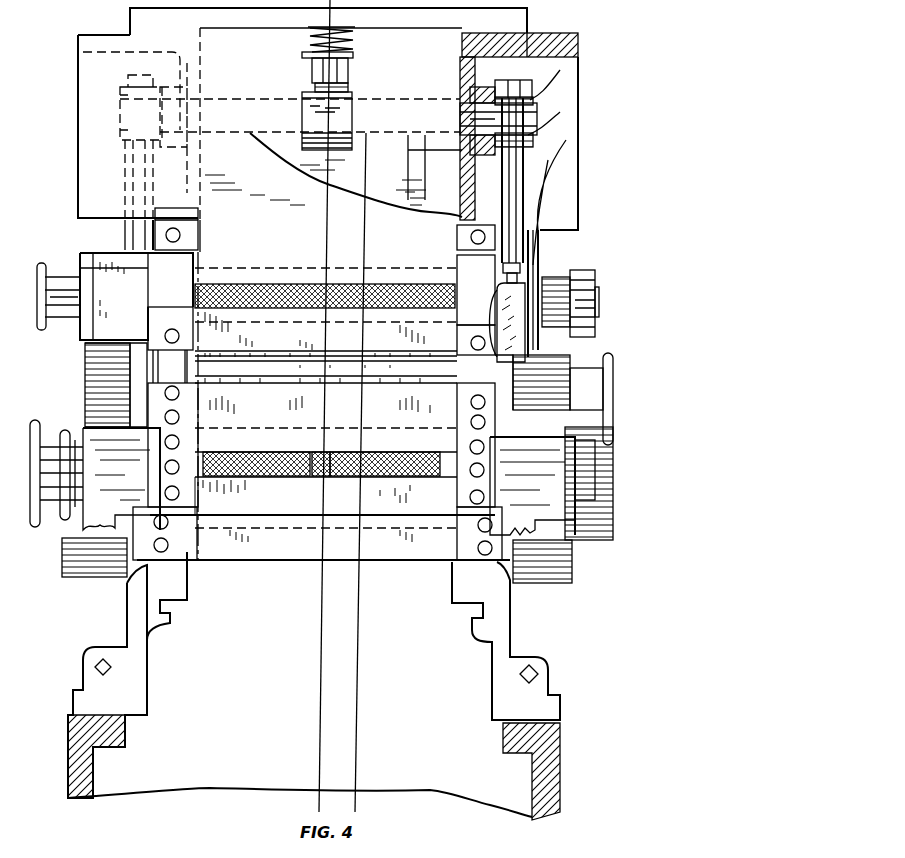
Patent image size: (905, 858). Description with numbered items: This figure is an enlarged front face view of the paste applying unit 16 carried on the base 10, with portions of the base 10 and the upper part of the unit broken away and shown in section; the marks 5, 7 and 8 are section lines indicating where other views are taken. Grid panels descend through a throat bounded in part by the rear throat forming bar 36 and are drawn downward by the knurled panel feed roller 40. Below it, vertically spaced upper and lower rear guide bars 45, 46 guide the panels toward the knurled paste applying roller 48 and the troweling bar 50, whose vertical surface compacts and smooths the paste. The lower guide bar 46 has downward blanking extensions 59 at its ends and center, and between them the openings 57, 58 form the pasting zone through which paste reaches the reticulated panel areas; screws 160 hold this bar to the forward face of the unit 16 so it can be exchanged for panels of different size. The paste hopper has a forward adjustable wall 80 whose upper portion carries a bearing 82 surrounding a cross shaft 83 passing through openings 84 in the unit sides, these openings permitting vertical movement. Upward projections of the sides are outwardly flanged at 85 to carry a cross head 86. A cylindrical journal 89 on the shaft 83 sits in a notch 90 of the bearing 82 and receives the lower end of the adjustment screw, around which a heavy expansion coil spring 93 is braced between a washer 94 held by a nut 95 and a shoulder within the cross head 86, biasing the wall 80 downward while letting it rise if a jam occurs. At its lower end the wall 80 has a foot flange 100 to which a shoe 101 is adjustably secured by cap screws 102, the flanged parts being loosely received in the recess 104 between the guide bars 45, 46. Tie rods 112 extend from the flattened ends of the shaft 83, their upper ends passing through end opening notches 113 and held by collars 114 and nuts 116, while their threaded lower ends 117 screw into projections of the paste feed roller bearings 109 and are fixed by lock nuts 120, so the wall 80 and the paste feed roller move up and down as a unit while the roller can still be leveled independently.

The gear 5 is at (540, 373).
The section line 7 is at (328, 8).
The section line 8 is at (325, 225).
The base 10 is at (560, 776).
The paste applying unit 16 is at (533, 36).
The rear throat forming bar 36 is at (315, 195).
The panel feed roller 40 is at (380, 292).
The upper rear guide bar 45 is at (240, 313).
The lower rear guide bar 46 is at (326, 410).
The paste applying roller 48 is at (394, 447).
The troweling bar 50 is at (262, 545).
The opening 57 is at (253, 452).
The opening 58 is at (345, 452).
The extensions 59 is at (202, 480).
The forward adjustable hopper wall 80 is at (418, 167).
The bearing 82 is at (397, 100).
The cross shaft 83 is at (488, 87).
The openings 84 is at (195, 88).
The outward flanges 85 is at (82, 60).
The cross head 86 is at (527, 22).
The cylindrical journal 89 is at (343, 100).
The notch 90 is at (312, 90).
The expansion coil spring 93 is at (350, 42).
The washer 94 is at (370, 48).
The nut 95 is at (302, 68).
The foot flange 100 is at (335, 362).
The shoe 101 is at (385, 375).
The cap screws 102 is at (262, 355).
The recess 104 is at (338, 385).
The bearings 109 is at (548, 311).
The tie rods 112 is at (525, 200).
The end opening notches 113 is at (552, 105).
The collars 114 is at (120, 130).
The nuts 116 is at (132, 80).
The threaded ends 117 is at (535, 272).
The lock nuts 120 is at (545, 285).
The screws 160 is at (165, 417).